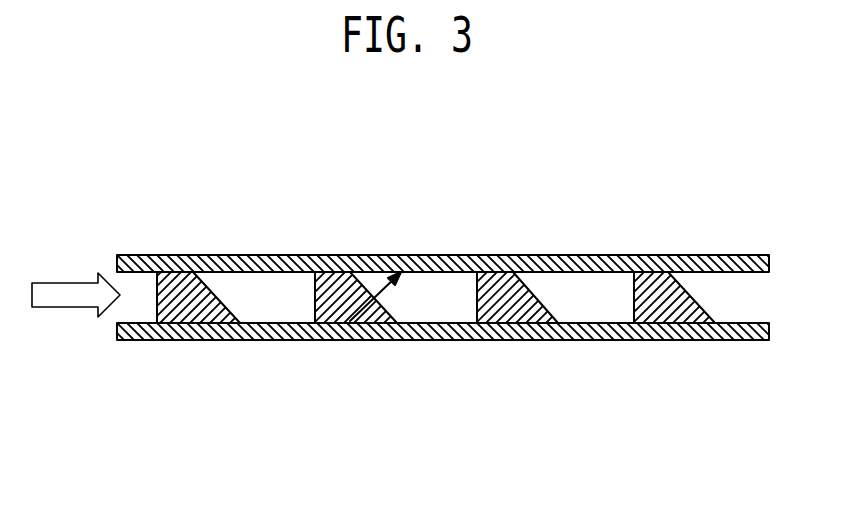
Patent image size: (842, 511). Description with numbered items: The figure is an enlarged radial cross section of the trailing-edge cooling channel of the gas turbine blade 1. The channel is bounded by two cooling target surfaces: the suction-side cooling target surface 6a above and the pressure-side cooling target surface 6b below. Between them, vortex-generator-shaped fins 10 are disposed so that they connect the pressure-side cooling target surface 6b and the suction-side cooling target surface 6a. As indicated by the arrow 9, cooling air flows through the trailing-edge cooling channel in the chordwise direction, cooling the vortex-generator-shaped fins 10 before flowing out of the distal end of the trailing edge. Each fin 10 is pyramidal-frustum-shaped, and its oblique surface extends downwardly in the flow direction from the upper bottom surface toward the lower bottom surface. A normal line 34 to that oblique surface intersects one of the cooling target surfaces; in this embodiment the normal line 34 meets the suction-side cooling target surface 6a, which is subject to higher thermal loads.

The heat exchanger flow path structure 1 is at (542, 226).
The suction-side cooling target surface 6a is at (244, 281).
The pressure-side cooling target surface 6b is at (273, 323).
The arrow 9 is at (70, 282).
The vortex-generator-shaped fin 10 is at (343, 313).
The normal line 34 is at (372, 279).